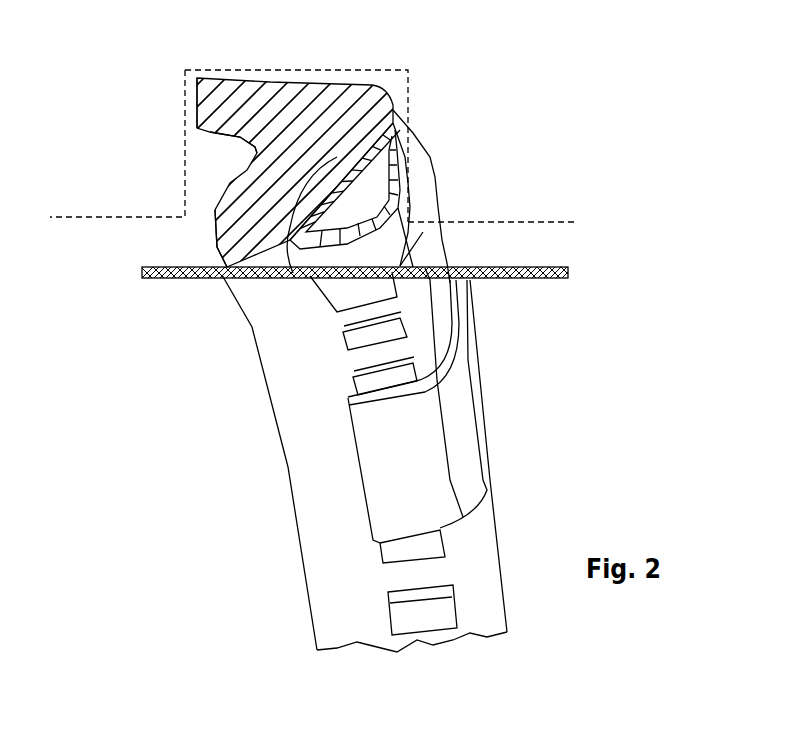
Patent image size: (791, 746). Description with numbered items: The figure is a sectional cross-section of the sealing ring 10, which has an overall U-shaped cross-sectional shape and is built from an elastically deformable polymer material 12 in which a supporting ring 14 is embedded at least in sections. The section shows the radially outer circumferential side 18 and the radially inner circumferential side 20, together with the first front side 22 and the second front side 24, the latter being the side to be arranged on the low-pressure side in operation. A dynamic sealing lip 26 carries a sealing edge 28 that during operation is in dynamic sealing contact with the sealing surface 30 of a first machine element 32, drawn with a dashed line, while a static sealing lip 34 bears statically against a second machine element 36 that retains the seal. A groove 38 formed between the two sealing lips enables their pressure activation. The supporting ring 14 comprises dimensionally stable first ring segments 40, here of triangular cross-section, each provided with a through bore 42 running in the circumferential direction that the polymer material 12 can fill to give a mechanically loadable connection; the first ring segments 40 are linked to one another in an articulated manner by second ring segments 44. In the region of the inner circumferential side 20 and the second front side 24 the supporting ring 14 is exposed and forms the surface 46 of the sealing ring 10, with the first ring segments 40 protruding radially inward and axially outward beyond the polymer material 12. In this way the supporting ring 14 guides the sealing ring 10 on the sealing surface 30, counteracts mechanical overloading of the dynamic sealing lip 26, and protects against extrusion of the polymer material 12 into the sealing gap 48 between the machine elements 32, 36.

The sealing ring 10 is at (548, 117).
The polymer material 12 is at (311, 115).
The supporting ring 14 is at (394, 124).
The outer circumferential side 18 is at (270, 82).
The inner circumferential side 20 is at (323, 443).
The first front side 22 is at (195, 86).
The second front side 24 is at (443, 292).
The dynamic sealing lip 26 is at (220, 253).
The sealing edge 28 is at (270, 82).
The sealing surface 30 is at (557, 269).
The first machine element 32 is at (168, 273).
The static sealing lip 34 is at (207, 97).
The second machine element 36 is at (104, 198).
The groove 38 is at (218, 170).
The first ring segments 40 is at (431, 157).
The through bore 42 is at (366, 192).
The second ring segments 44 is at (409, 327).
The surface 46 is at (448, 264).
The sealing gap 48 is at (523, 235).